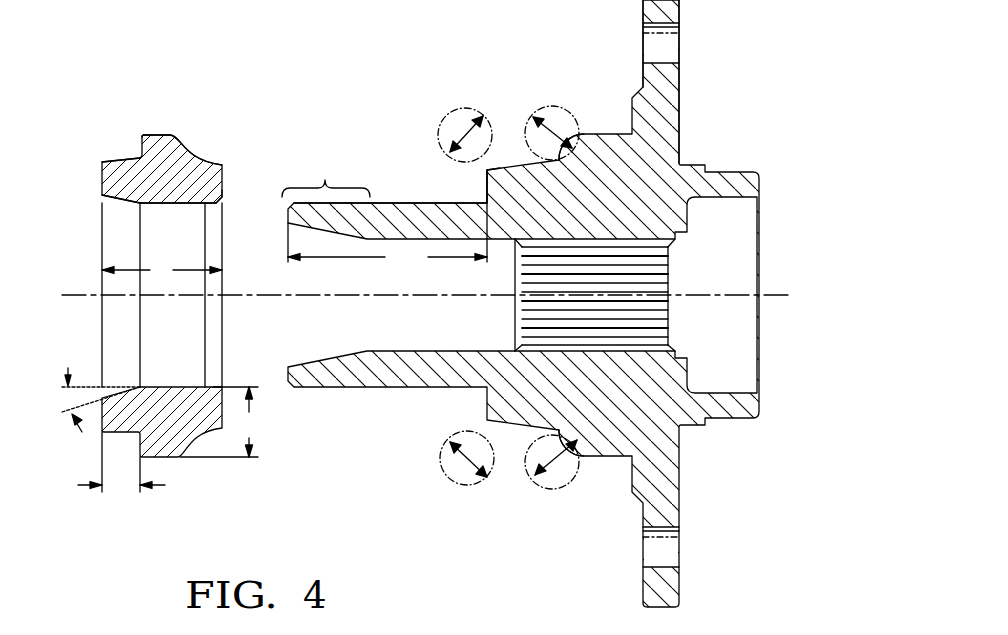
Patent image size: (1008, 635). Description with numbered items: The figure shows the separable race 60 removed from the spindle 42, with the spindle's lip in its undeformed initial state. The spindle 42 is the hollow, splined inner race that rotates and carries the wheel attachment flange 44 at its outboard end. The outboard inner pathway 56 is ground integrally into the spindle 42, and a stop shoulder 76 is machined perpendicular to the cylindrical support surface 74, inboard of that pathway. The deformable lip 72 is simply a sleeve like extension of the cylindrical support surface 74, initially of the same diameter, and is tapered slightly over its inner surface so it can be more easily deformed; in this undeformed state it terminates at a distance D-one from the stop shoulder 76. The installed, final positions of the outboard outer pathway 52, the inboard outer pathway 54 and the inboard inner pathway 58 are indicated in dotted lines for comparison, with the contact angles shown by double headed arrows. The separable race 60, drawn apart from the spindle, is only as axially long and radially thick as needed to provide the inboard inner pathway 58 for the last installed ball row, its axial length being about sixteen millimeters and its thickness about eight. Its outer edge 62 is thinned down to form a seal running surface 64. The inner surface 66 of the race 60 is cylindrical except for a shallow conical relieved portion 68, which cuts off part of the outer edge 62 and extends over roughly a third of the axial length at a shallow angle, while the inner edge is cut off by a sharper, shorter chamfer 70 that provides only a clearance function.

The spindle 42 is at (741, 166).
The wheel attachment flange 44 is at (680, 79).
The outboard outer pathway 52 is at (545, 107).
The inboard outer pathway 54 is at (465, 108).
The outboard inner pathway 56 is at (573, 127).
The inboard inner pathway 58 is at (180, 150).
The separable race 60 is at (162, 126).
The outer edge 62 is at (102, 168).
The seal running surface 64 is at (125, 158).
The inner surface 66 is at (178, 207).
The conical relieved portion 68 is at (130, 202).
The chamfer 70 is at (226, 203).
The deformable lip 72 is at (325, 180).
The cylindrical support surface 74 is at (390, 203).
The stop shoulder 76 is at (480, 170).